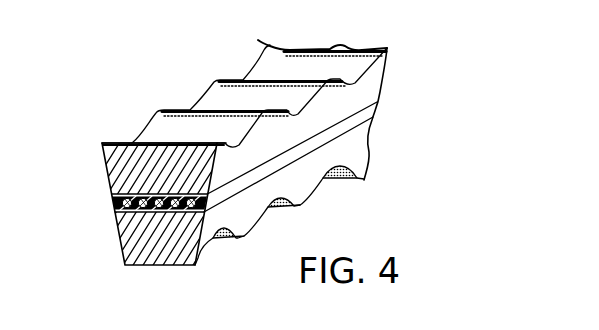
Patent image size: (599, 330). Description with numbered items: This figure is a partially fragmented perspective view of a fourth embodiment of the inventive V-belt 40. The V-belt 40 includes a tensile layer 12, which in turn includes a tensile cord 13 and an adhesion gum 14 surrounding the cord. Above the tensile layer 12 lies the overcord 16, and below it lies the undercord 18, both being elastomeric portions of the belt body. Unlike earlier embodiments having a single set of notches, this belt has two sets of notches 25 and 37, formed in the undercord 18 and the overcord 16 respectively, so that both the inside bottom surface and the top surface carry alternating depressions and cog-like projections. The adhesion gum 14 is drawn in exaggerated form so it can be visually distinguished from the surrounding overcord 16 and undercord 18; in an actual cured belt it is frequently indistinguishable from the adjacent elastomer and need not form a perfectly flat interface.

The V-belt 40 is at (410, 76).
The notches 37 is at (273, 77).
The overcord 16 is at (120, 143).
The tensile cord 13 is at (115, 182).
The tensile layer 12 is at (97, 206).
The adhesion gum 14 is at (210, 200).
The undercord 18 is at (192, 264).
The notches 25 is at (298, 207).